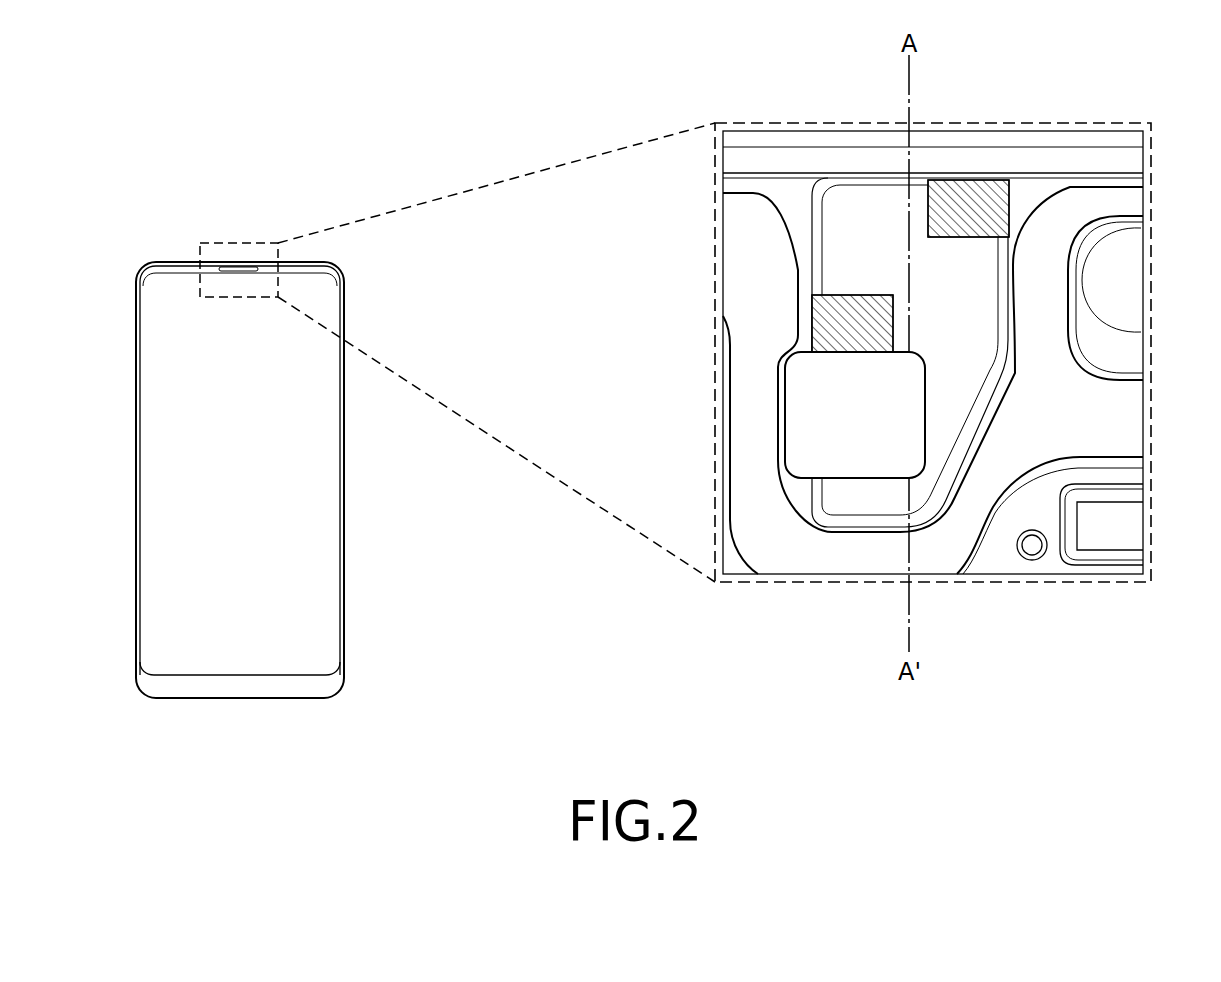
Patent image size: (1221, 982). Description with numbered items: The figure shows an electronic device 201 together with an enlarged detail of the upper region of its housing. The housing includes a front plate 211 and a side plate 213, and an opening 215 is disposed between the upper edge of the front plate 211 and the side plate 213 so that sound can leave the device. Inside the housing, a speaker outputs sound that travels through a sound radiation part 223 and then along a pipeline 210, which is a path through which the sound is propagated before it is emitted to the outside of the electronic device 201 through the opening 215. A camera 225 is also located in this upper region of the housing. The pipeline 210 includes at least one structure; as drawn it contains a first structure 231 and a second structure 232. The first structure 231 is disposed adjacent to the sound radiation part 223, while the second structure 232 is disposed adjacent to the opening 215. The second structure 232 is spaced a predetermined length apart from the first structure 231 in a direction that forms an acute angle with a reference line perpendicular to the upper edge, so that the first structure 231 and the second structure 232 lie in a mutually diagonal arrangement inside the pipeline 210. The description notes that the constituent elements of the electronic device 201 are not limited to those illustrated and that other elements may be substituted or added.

The electronic device 201 is at (198, 204).
The front plate 211 is at (324, 475).
The side plate 213 is at (308, 262).
The opening 215 is at (232, 266).
The pipeline 210 is at (848, 240).
The first structure 231 is at (812, 323).
The second structure 232 is at (998, 190).
The sound radiation part 223 is at (785, 412).
The camera 225 is at (1122, 285).